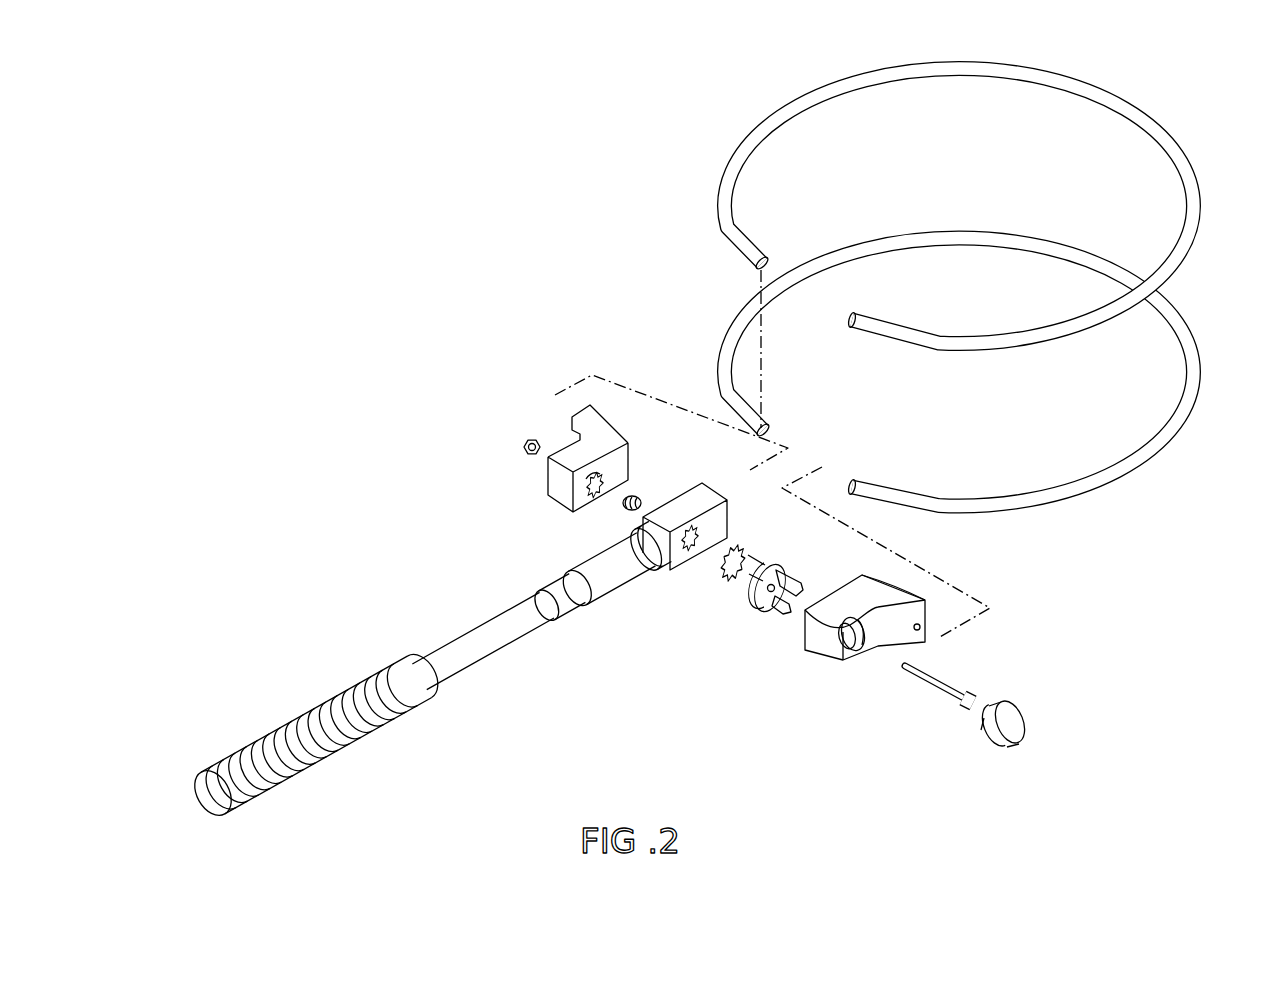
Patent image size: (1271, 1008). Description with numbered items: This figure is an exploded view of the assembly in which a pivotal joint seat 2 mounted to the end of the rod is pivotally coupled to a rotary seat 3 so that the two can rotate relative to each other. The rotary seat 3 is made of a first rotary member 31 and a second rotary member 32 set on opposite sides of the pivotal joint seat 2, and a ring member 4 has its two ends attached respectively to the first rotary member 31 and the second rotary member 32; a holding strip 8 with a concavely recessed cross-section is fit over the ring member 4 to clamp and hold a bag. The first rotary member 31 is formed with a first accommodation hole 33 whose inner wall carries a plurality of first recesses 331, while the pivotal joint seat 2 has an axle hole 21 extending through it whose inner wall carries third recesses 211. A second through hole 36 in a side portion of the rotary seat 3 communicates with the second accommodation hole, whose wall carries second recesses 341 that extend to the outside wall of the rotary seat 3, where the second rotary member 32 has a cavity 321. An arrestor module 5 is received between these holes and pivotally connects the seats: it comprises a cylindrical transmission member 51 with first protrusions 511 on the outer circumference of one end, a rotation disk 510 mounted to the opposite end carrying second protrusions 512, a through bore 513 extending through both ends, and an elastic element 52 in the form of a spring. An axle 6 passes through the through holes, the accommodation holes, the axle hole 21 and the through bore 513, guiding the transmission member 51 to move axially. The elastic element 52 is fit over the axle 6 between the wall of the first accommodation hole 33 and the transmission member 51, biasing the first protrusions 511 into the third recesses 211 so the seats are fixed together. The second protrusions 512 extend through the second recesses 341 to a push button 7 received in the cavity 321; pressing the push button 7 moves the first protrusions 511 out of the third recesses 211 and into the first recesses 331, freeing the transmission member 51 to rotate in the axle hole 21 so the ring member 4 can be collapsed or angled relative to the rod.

The pivotal joint seat 2 is at (480, 646).
The axle hole 21 is at (697, 560).
The third recess 211 is at (703, 532).
The rotary seat 3 is at (725, 548).
The first rotary member 31 is at (609, 458).
The second rotary member 32 is at (866, 624).
The first accommodation hole 33 is at (598, 497).
The first recess 331 is at (605, 475).
The second through hole 36 is at (856, 644).
The second recess 341 is at (848, 660).
The cavity 321 is at (866, 648).
The ring member 4 is at (1115, 473).
The holding strip 8 is at (1192, 197).
The arrestor module 5 is at (759, 593).
The transmission member 51 is at (758, 560).
The rotation disk 510 is at (758, 603).
The first protrusion 511 is at (726, 572).
The second protrusion 512 is at (776, 612).
The through bore 513 is at (792, 582).
The elastic element 52 is at (640, 500).
The axle 6 is at (952, 686).
The push button 7 is at (1010, 718).